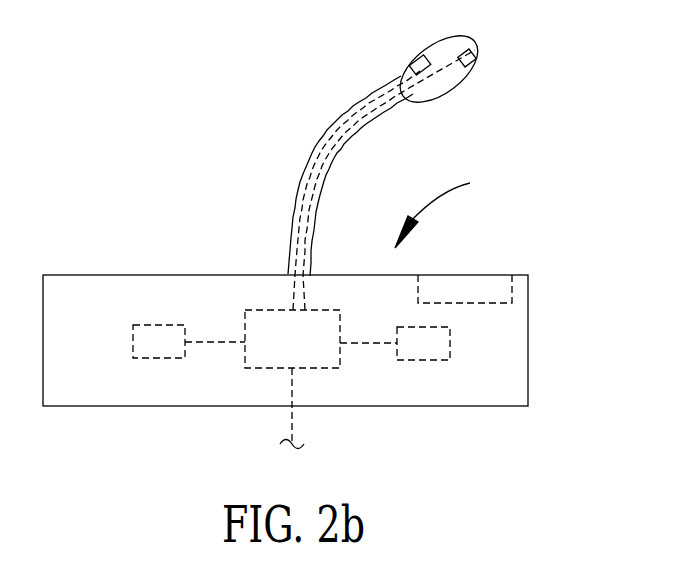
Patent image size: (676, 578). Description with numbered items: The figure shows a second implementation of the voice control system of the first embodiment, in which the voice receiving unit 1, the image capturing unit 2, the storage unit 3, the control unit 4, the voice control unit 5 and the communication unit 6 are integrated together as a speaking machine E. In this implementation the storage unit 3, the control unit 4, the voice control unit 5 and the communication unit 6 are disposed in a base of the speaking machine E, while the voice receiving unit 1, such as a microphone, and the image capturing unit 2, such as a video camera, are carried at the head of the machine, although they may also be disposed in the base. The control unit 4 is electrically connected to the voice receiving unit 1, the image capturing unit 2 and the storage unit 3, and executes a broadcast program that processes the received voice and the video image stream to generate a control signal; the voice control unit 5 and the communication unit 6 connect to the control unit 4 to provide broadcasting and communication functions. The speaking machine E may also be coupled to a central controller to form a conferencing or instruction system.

The voice receiving unit 1 is at (413, 55).
The image capturing unit 2 is at (473, 75).
The storage unit 3 is at (440, 343).
The control unit 4 is at (265, 310).
The voice control unit 5 is at (512, 288).
The communication unit 6 is at (160, 327).
The speaking machine E is at (444, 207).